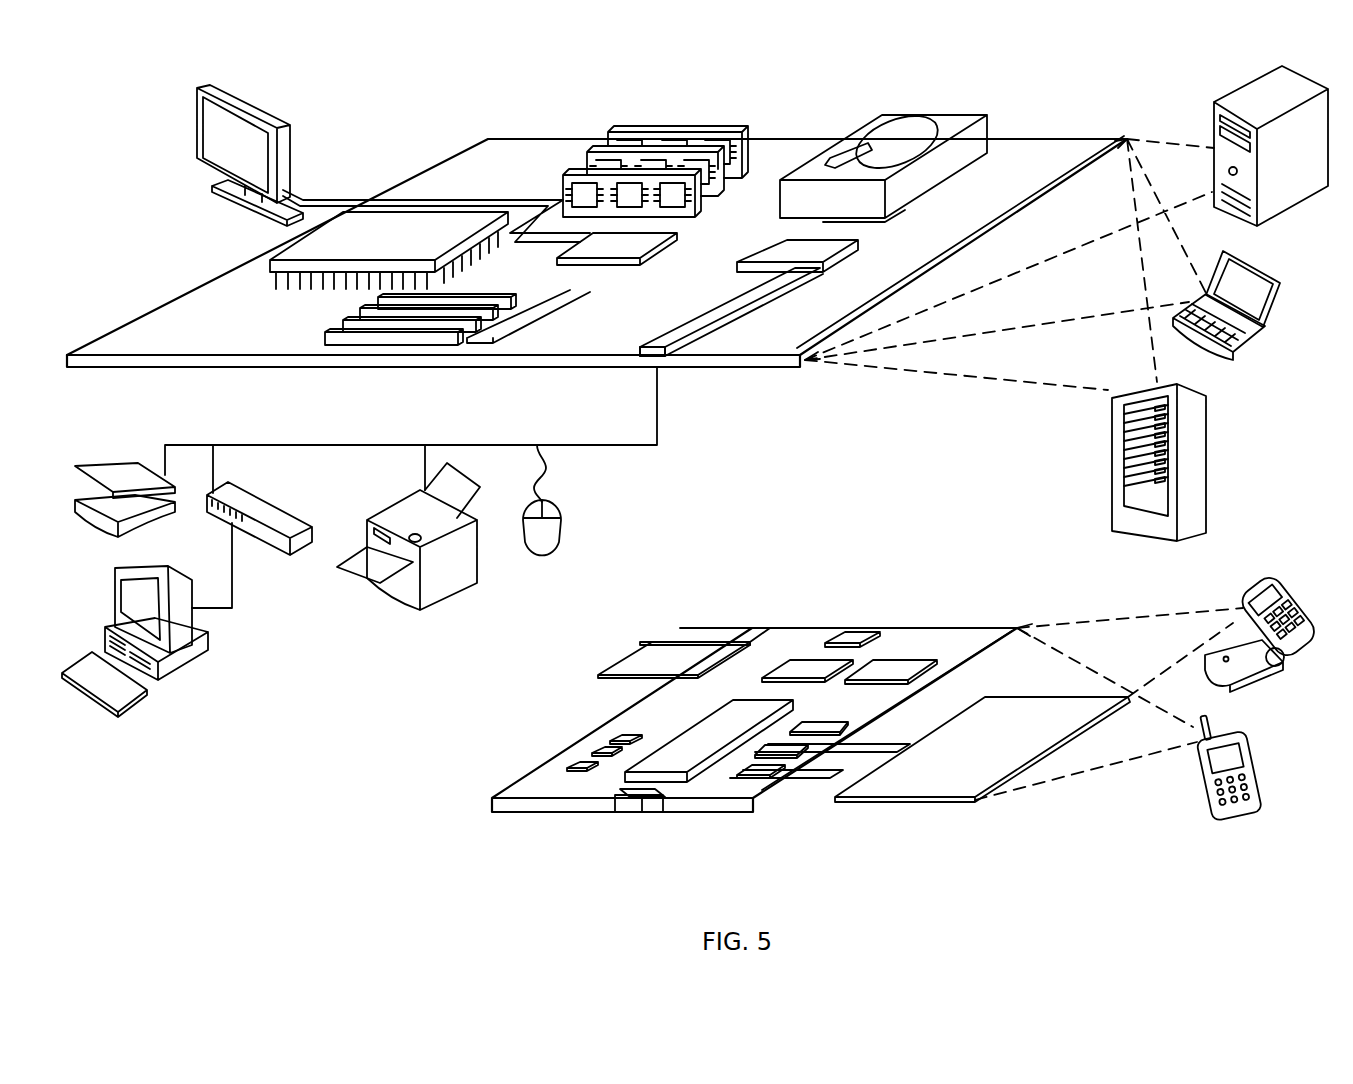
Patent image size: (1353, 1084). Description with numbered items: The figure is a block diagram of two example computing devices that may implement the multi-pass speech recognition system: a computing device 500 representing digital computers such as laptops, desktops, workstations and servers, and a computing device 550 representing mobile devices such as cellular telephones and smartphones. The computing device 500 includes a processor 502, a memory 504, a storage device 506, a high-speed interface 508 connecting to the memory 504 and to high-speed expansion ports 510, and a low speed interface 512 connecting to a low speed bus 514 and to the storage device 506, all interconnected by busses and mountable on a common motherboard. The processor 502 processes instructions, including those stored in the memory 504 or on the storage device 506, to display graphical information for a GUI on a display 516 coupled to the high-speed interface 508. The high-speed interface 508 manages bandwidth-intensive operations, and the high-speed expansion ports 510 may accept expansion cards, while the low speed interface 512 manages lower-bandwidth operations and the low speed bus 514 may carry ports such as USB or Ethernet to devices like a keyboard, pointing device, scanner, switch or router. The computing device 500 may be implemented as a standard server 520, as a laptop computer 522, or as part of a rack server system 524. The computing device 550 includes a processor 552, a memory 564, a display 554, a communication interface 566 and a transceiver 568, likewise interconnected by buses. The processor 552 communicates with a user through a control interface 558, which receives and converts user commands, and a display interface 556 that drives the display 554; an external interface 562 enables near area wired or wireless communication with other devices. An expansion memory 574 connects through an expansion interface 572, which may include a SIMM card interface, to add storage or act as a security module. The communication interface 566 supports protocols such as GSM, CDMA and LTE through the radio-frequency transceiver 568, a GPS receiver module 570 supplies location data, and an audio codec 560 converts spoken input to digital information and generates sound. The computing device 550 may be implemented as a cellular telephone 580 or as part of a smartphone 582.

The computing device 500 is at (404, 110).
The processor 502 is at (268, 262).
The memory 504 is at (633, 128).
The storage device 506 is at (873, 116).
The high-speed interface 508 is at (592, 248).
The high-speed expansion ports 510 is at (352, 325).
The low speed interface 512 is at (777, 252).
The low speed bus 514 is at (667, 357).
The display 516 is at (202, 82).
The standard server 520 is at (1214, 119).
The laptop computer 522 is at (1286, 278).
The rack server system 524 is at (1112, 486).
The computing device 550 is at (468, 805).
The processor 552 is at (680, 765).
The display 554 is at (935, 782).
The display interface 556 is at (752, 778).
The control interface 558 is at (795, 750).
The audio codec 560 is at (818, 730).
The external interface 562 is at (642, 812).
The memory 564 is at (587, 760).
The communication interface 566 is at (810, 667).
The transceiver 568 is at (893, 668).
The GPS receiver module 570 is at (863, 638).
The expansion interface 572 is at (733, 640).
The expansion memory 574 is at (652, 642).
The cellular telephone 580 is at (1262, 584).
The smartphone 582 is at (1196, 766).